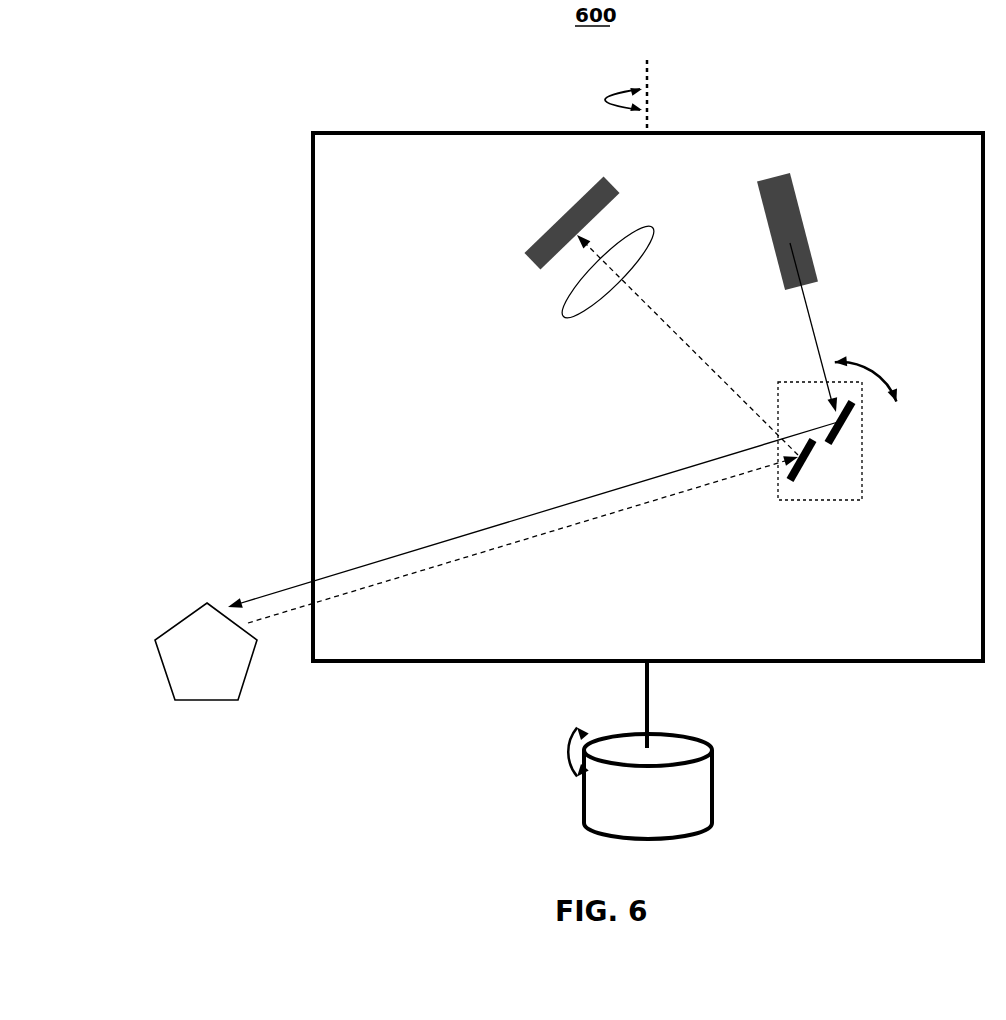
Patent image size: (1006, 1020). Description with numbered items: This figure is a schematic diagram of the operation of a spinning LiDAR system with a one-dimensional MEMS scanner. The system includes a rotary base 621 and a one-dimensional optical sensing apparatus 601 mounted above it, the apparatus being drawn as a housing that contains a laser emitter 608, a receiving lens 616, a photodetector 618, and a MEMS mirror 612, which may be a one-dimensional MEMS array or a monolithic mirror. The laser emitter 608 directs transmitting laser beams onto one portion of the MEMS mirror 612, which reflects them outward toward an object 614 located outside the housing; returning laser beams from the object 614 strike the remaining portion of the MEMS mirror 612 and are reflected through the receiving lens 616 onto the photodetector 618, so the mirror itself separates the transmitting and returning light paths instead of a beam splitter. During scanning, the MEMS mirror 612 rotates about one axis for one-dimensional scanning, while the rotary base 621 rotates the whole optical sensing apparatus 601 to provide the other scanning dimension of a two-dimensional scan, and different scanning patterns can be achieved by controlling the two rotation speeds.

The 1D optical sensing apparatus 601 is at (866, 131).
The laser emitter 608 is at (812, 265).
The MEMS mirror 612 is at (862, 500).
The object 614 is at (496, 561).
The receiving lens 616 is at (593, 303).
The photodetector 618 is at (537, 268).
The rotary base 621 is at (688, 740).